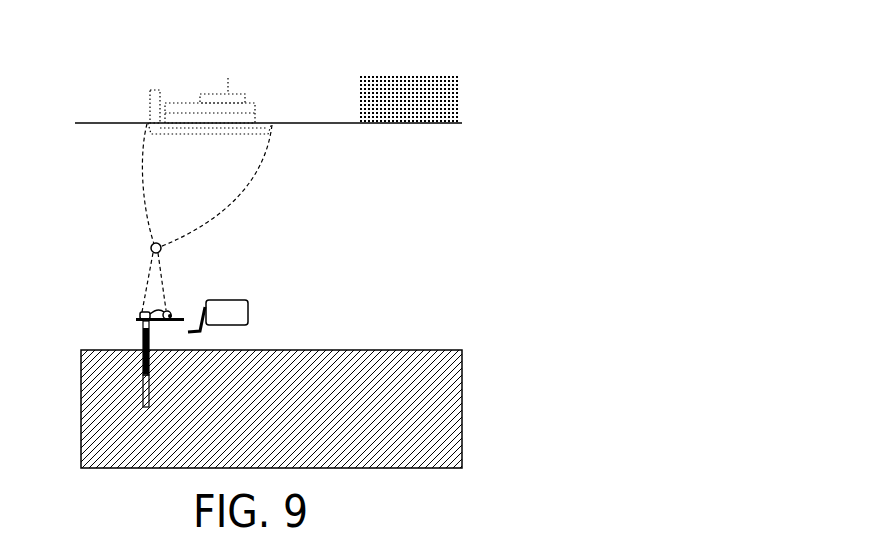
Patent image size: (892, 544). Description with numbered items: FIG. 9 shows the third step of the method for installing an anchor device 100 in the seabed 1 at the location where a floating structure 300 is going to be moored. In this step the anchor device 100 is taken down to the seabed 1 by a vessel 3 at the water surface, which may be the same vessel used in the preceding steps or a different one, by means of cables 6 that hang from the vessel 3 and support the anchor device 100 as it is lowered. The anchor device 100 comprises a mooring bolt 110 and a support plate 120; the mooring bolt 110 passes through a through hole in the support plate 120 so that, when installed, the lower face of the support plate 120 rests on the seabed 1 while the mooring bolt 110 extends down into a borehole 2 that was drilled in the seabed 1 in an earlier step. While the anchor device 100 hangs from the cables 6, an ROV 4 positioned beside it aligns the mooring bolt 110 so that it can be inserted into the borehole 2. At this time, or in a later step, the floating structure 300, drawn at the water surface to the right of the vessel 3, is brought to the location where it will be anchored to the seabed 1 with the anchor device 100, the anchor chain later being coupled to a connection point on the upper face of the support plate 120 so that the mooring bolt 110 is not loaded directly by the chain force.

The seabed 1 is at (337, 349).
The borehole 2 is at (142, 380).
The vessel 3 is at (260, 107).
The ROV 4 is at (228, 300).
The cables 6 is at (143, 212).
The anchor device 100 is at (140, 314).
The mooring bolt 110 is at (143, 348).
The support plate 120 is at (170, 311).
The floating structure 300 is at (432, 111).